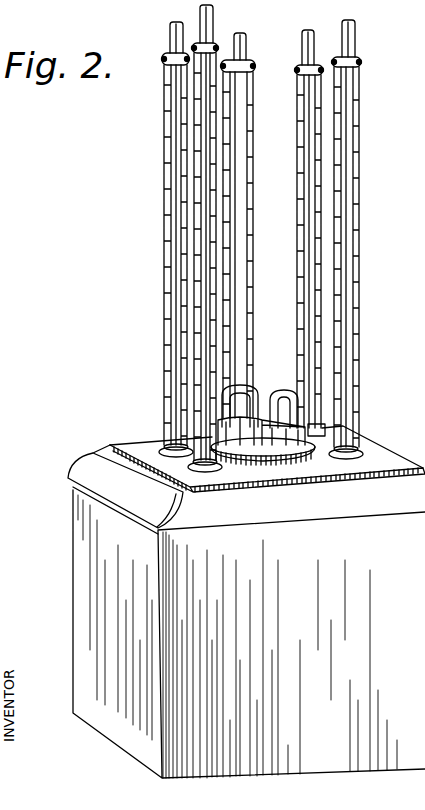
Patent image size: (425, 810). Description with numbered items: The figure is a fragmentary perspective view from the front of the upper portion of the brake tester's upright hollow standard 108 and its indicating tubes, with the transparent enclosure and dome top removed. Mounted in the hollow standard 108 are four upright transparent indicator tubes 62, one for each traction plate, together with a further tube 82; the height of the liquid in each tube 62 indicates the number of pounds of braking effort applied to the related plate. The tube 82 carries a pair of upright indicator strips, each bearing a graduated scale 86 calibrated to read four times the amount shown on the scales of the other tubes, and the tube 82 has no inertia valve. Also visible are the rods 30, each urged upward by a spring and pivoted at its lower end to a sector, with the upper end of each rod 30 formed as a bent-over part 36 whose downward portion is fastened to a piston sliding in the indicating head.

The rod 30 is at (190, 428).
The bent-over part 36 is at (290, 388).
The indicator tube 62 is at (190, 198).
The tube 82 is at (235, 238).
The scale 86 is at (262, 112).
The hollow standard 108 is at (76, 555).